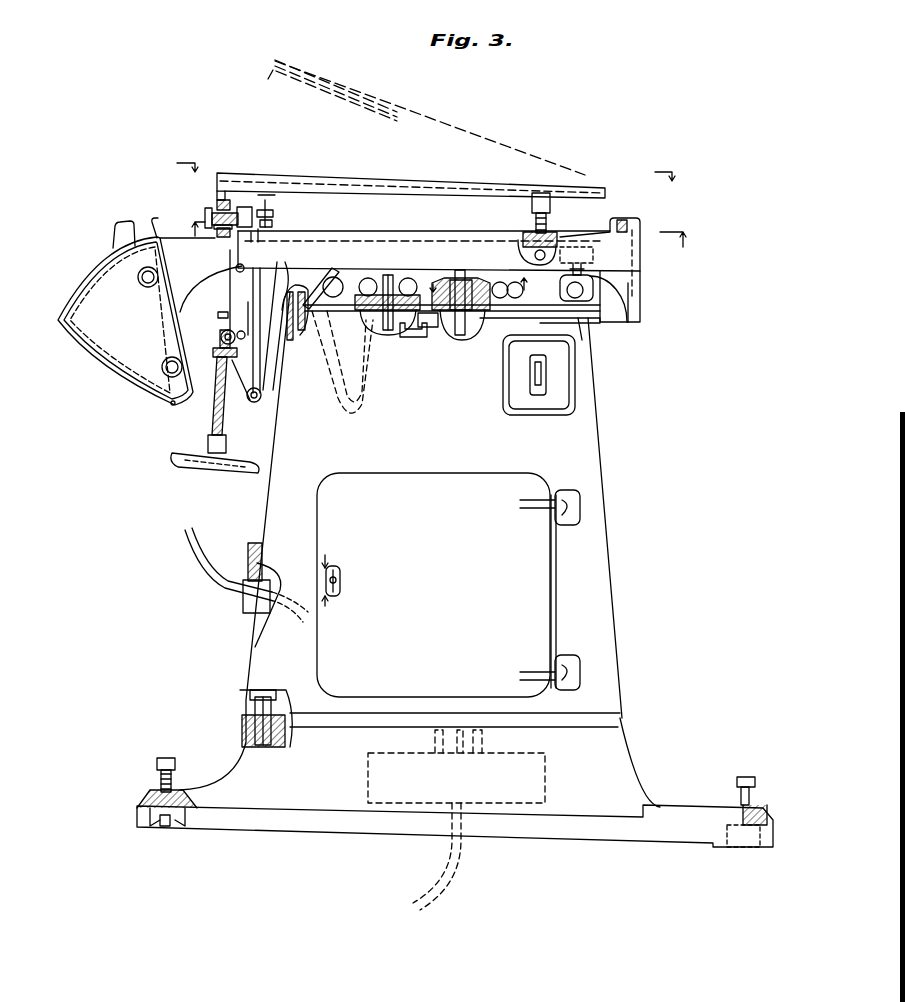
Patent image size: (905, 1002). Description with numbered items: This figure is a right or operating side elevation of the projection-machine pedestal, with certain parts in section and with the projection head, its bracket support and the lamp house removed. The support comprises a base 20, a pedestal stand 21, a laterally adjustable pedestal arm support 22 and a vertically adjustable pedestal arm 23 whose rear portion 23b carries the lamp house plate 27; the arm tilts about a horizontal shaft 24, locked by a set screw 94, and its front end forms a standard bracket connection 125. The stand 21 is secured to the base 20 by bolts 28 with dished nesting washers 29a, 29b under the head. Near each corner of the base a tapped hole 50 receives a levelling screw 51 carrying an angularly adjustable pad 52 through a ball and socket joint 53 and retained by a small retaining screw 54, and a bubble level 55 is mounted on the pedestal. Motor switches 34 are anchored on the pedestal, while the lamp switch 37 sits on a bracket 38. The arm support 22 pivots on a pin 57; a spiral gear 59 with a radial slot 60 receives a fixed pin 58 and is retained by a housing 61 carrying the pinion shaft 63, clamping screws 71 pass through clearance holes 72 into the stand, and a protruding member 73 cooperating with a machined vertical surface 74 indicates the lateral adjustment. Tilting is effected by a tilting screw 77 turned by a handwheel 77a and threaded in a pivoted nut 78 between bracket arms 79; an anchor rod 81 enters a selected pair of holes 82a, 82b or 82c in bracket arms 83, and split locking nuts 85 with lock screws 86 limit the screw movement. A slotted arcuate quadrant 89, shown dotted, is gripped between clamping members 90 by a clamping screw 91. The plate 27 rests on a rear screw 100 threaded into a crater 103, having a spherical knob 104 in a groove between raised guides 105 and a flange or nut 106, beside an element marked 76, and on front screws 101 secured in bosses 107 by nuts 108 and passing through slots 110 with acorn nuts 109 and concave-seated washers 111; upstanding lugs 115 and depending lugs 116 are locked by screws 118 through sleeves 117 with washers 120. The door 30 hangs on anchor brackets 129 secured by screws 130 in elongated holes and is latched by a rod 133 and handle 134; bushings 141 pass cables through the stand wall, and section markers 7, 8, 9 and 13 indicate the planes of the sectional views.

The section line 7- 7 is at (435, 237).
The section line 8- 8 is at (425, 179).
The section line 9- 9 is at (323, 580).
The section line 13- 13 is at (486, 281).
The base 20 is at (300, 825).
The pedestal stand 21 is at (597, 485).
The pedestal arm support 22 is at (597, 320).
The pedestal arm 23 is at (597, 225).
The rear portion of pedestal arm 23b is at (416, 240).
The horizontal shaft 24 is at (584, 292).
The lamp house carriage or plate 27 is at (470, 178).
The bolts 28 is at (252, 698).
The dished nesting washer 29a is at (237, 714).
The dished nesting washer 29b is at (275, 692).
The door 30 is at (540, 585).
The motor switches 34 is at (546, 375).
The switch 37 is at (136, 311).
The bracket 38 is at (189, 272).
The tapped hole 50 is at (148, 795).
The levelling screws 51 is at (157, 764).
The angularly adjustable pads 52 is at (152, 828).
The ball and socket joint 53 is at (185, 828).
The retaining screw 54 is at (165, 828).
The bubble level 55 is at (413, 339).
The pin 57 is at (295, 338).
The pin 58 is at (455, 330).
The spiral gear 59 is at (478, 280).
The radial slot 60 is at (468, 335).
The housing 61 is at (486, 280).
The shaft 63 is at (448, 278).
The clamping screws 71 is at (390, 276).
The clearance holes 72 is at (408, 285).
The partly protruding member 73 is at (578, 322).
The machined vertical surface 74 is at (568, 320).
The lever 76 is at (247, 243).
The tilting screw 77 is at (212, 418).
The handwheel 77a is at (172, 460).
The pivoted nut 78 is at (221, 337).
The bracket arms 79 is at (287, 284).
The anchor rod 81 is at (238, 272).
The paired holes 82a is at (217, 290).
The paired holes 82b is at (251, 313).
The paired holes 82c is at (254, 403).
The bracket arms 83 is at (248, 330).
The locking nuts 85 is at (218, 315).
The lock screws 86 is at (213, 352).
The slotted arcuate quadrant 89 is at (348, 374).
The clamping members 90 is at (340, 288).
The clamping screw 91 is at (338, 270).
The set screw 94 is at (582, 272).
The rear screw 100 is at (263, 204).
The front screws 101 is at (547, 220).
The crater 103 is at (270, 205).
The spherical knob 104 is at (272, 241).
The raised guides 105 is at (273, 223).
The non-circular flange or nut 106 is at (273, 212).
The tubular projections or bosses 107 is at (522, 190).
The nuts 108 is at (536, 218).
The acorn nuts 109 is at (557, 235).
The slots 110 is at (560, 240).
The washers 111 is at (523, 238).
The upstanding lugs 115 is at (243, 207).
The depending lugs 116 is at (222, 240).
The sleeves or bushings 117 is at (225, 180).
The locking screws 118 is at (204, 212).
The washer 120 is at (214, 230).
The standard bracket connection 125 is at (623, 290).
The anchor brackets 129 is at (585, 515).
The screws 130 is at (582, 500).
The rod 133 is at (340, 580).
The handle 134 is at (340, 566).
The bushings 141 is at (243, 610).